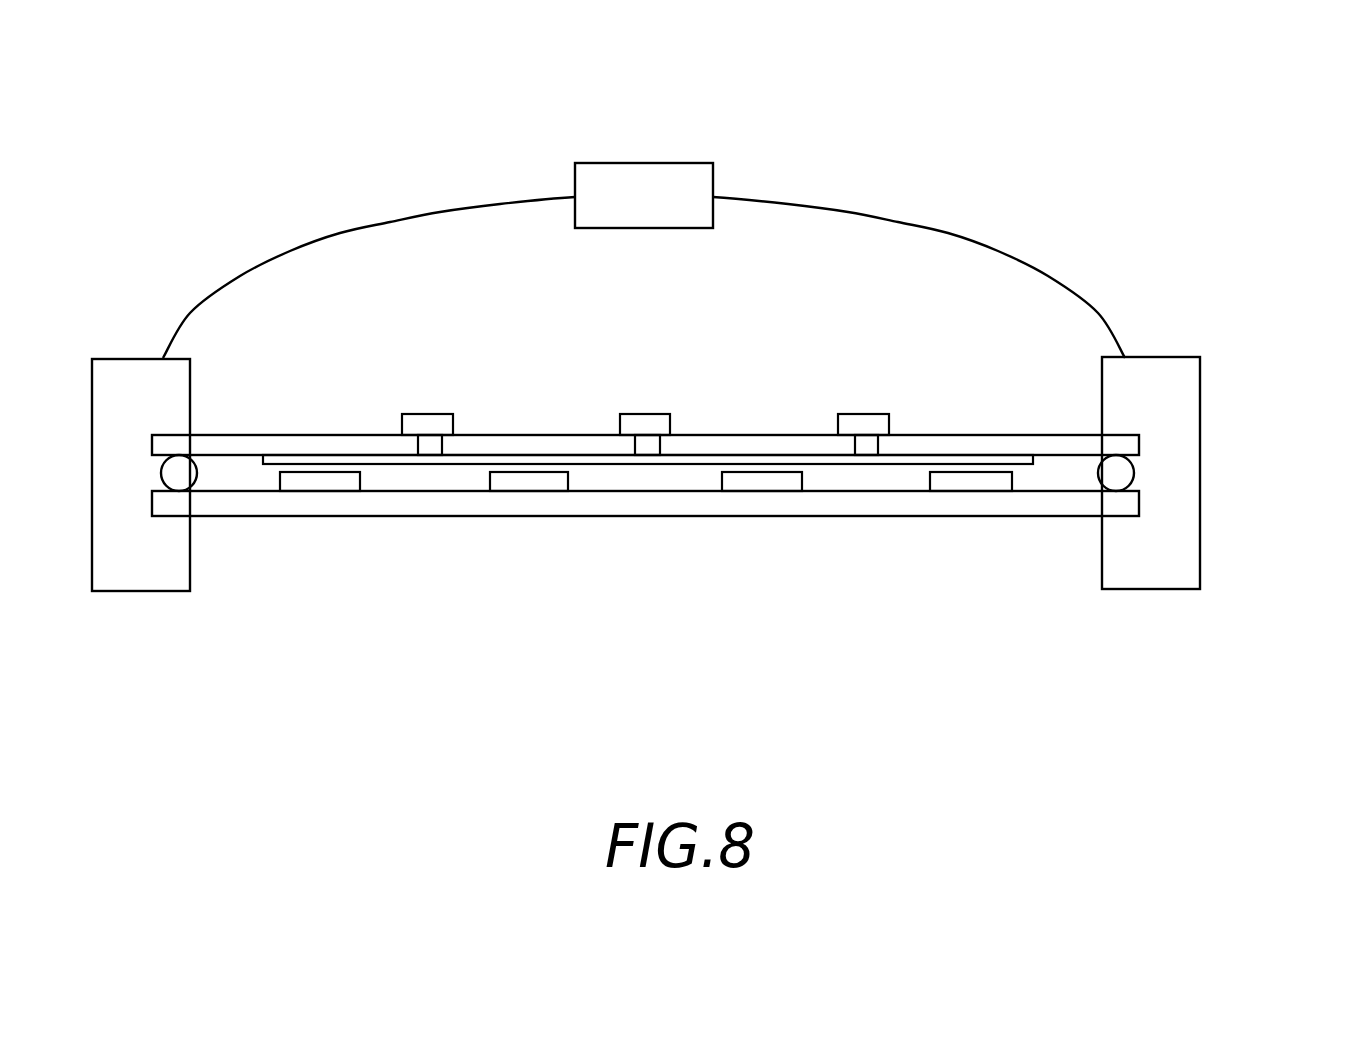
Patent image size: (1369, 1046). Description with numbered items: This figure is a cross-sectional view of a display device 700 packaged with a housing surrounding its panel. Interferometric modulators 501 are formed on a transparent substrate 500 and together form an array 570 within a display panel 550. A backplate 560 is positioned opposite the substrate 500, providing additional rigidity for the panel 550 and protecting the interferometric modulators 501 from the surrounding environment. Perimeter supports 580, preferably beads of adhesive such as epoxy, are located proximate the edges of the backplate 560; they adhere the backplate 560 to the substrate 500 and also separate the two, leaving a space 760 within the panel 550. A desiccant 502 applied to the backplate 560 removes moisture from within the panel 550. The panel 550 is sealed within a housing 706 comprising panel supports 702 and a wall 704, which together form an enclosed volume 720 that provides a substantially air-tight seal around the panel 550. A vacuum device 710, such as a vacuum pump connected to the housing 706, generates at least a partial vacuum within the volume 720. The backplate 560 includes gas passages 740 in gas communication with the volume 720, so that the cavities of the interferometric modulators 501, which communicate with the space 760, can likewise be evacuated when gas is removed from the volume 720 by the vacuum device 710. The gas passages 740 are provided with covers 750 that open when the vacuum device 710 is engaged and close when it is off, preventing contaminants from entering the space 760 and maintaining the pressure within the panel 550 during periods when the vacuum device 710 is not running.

The display device 700 is at (1100, 182).
The panel supports 702 is at (131, 567).
The wall 704 is at (1065, 288).
The housing 706 is at (198, 230).
The vacuum device 710 is at (675, 163).
The enclosed volume 720 is at (385, 275).
The gas passages 740 is at (432, 447).
The covers or valves 750 is at (414, 413).
The space 760 is at (240, 478).
The substrate 500 is at (1123, 505).
The interferometric modulators 501 is at (525, 483).
The desiccant 502 is at (968, 462).
The display panel 550 is at (1010, 590).
The backplate 560 is at (1139, 444).
The array 570 is at (928, 667).
The perimeter supports 580 is at (1120, 472).